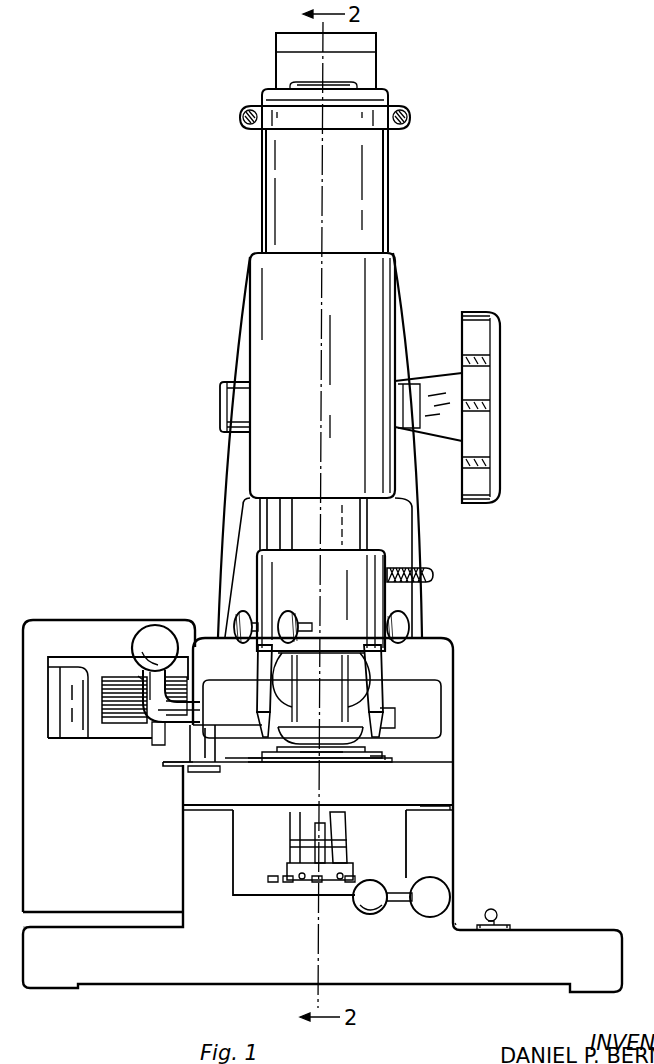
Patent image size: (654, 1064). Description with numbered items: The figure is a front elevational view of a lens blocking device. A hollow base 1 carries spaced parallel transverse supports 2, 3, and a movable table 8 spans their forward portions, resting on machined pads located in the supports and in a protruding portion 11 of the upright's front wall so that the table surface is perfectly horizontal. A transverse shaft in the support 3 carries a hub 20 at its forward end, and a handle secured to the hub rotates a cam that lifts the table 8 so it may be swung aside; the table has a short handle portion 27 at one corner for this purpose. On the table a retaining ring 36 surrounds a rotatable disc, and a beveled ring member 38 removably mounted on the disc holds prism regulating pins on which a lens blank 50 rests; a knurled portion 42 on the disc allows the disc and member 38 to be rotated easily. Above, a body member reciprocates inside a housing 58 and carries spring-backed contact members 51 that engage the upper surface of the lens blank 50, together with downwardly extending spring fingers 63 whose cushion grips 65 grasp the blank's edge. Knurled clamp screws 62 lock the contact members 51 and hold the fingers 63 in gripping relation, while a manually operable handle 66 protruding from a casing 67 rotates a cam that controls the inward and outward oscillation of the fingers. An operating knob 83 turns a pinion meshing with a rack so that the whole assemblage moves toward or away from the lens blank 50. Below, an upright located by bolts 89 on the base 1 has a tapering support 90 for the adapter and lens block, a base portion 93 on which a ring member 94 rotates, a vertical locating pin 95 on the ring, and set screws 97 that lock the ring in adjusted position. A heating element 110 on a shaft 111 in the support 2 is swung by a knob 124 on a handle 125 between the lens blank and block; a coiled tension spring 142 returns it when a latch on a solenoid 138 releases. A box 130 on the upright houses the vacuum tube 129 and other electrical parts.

The hollow base 1 is at (190, 984).
The transverse support 2 is at (193, 875).
The transverse support 3 is at (455, 838).
The movable table 8 is at (183, 788).
The protruding portion 11 is at (345, 823).
The hub 20 is at (427, 880).
The handle portion 27 is at (163, 770).
The retaining ring 36 is at (237, 763).
The beveled ring member 38 is at (337, 753).
The knurled portion 42 is at (376, 762).
The lens blank 50 is at (313, 737).
The contact members 51 is at (348, 703).
The housing 58 is at (383, 207).
The knurled clamp screw 62 is at (385, 618).
The spring fingers 63 is at (261, 665).
The cushion grips 65 is at (262, 723).
The manually operable handle 66 is at (433, 575).
The casing 67 is at (383, 556).
The operating knob 83 is at (499, 402).
The bolts 89 is at (268, 877).
The tapering support 90 is at (305, 823).
The base portion 93 is at (272, 890).
The ring member 94 is at (357, 868).
The vertical locating pin 95 is at (305, 848).
The set screws 97 is at (303, 880).
The heating element 110 is at (400, 709).
The shaft 111 is at (200, 745).
The knob 124 is at (150, 631).
The handle 125 is at (138, 676).
The rectifier-amplifier thermionic vacuum tube 129 is at (68, 734).
The box 130 is at (43, 626).
The solenoid 138 is at (111, 725).
The coiled tension spring 142 is at (215, 769).